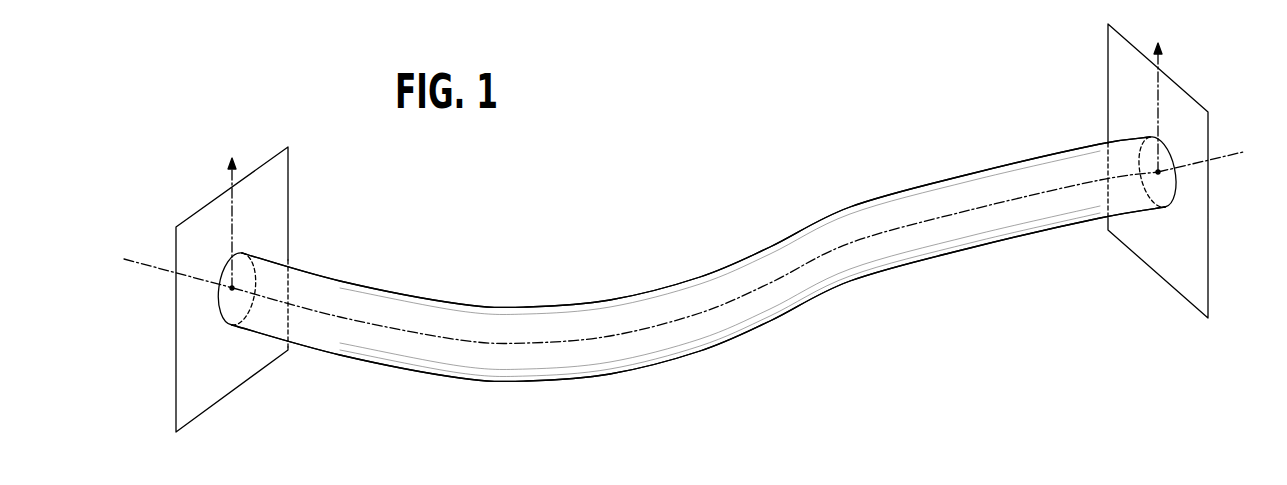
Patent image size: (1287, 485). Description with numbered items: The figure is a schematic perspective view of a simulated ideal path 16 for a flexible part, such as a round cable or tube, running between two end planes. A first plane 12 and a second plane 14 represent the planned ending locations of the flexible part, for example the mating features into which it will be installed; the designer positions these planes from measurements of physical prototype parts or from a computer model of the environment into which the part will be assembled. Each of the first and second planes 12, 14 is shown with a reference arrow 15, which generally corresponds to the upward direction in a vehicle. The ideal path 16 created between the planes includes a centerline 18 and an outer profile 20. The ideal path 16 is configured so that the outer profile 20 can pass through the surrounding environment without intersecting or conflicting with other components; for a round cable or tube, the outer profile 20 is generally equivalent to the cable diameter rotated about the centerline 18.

The first plane 12 is at (258, 167).
The second plane 14 is at (1192, 97).
The reference arrow 15 is at (230, 173).
The ideal path 16 is at (699, 272).
The centerline 18 is at (833, 253).
The outer profile 20 is at (465, 378).